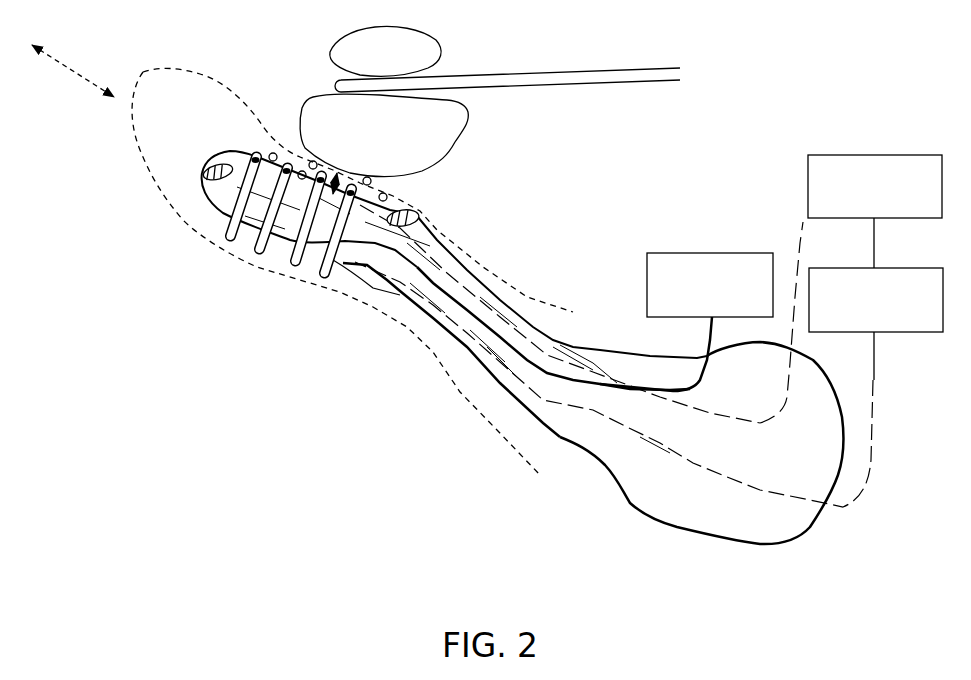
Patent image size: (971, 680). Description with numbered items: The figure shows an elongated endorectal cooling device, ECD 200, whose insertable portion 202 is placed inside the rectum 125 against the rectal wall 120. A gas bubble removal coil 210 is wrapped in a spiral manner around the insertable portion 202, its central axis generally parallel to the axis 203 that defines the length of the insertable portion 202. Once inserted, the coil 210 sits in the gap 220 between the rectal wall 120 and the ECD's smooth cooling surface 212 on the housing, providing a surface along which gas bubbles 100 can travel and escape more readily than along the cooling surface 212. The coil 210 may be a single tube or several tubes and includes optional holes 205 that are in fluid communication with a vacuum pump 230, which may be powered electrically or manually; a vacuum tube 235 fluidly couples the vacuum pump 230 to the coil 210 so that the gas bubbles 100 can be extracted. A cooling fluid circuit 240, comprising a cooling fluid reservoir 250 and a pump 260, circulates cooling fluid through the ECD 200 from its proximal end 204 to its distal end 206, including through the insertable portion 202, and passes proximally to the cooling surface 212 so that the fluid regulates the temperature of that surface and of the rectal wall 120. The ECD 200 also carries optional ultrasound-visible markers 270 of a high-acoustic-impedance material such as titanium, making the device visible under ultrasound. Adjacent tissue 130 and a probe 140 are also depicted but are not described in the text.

The gas bubbles 100 is at (303, 160).
The rectal wall 120 is at (243, 100).
The rectum 125 is at (287, 209).
The tissue 130 is at (384, 101).
The probe 140 is at (558, 68).
The ECD 200 is at (701, 443).
The insertable portion 202 is at (213, 140).
The axis 203 is at (81, 46).
The proximal end 204 is at (829, 532).
The holes 205 is at (290, 157).
The distal end 206 is at (197, 165).
The gas bubble removal coil 210 is at (240, 132).
The cooling surface 212 is at (363, 197).
The gap 220 is at (350, 176).
The vacuum pump 230 is at (710, 285).
The vacuum tube 235 is at (693, 340).
The cooling fluid circuit 240 is at (795, 238).
The cooling fluid reservoir 250 is at (875, 186).
The pump 260 is at (649, 362).
The ultrasound-visible markers 270 is at (208, 157).